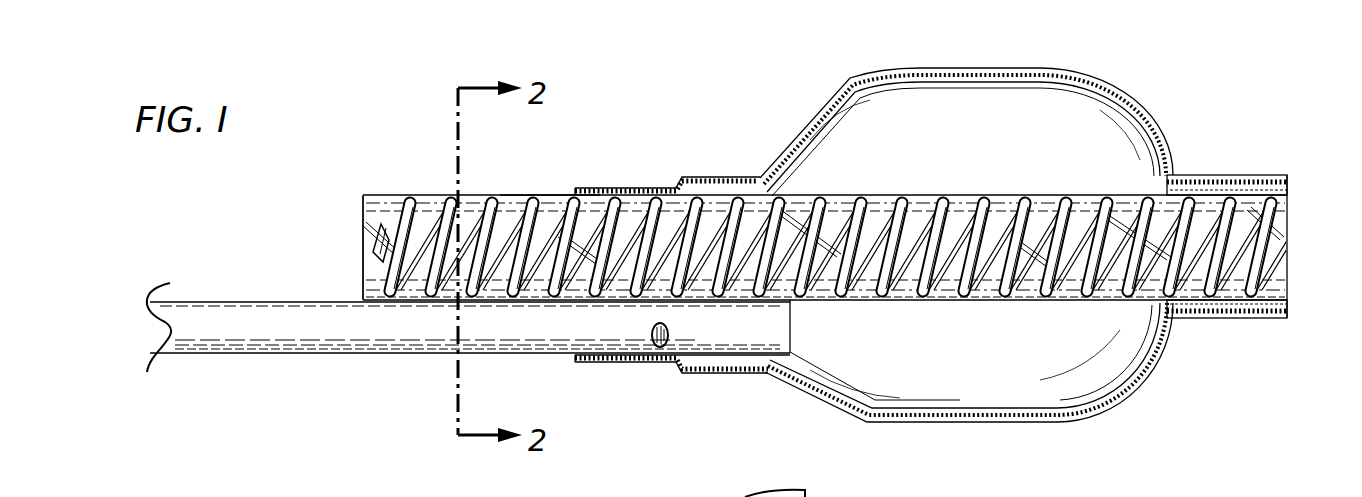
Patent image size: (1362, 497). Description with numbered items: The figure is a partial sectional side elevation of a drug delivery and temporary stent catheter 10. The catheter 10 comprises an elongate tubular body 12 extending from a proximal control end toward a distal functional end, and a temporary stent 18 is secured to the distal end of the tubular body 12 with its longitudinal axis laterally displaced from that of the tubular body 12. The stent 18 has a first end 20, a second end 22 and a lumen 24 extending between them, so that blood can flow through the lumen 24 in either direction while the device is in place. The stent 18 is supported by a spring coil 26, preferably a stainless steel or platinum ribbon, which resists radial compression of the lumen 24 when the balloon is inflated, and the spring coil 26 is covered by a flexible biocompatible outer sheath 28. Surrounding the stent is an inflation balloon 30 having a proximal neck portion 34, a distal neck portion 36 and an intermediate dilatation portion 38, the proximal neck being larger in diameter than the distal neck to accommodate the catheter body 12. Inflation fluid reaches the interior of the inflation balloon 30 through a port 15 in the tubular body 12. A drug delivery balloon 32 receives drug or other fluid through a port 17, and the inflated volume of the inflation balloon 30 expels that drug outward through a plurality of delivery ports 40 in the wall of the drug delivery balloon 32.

The catheter 10 is at (700, 64).
The tubular body 12 is at (248, 345).
The port 15 is at (792, 318).
The port 17 is at (655, 350).
The temporary stent 18 is at (493, 186).
The first end 20 is at (352, 233).
The second end 22 is at (1340, 240).
The lumen 24 is at (1286, 283).
The spring coil 26 is at (412, 208).
The outer sheath 28 is at (549, 195).
The inflation balloon 30 is at (1106, 396).
The drug delivery balloon 32 is at (836, 414).
The proximal neck portion 34 is at (744, 195).
The distal neck portion 36 is at (1290, 191).
The intermediate dilatation portion 38 is at (1094, 84).
The delivery ports 40 is at (916, 67).